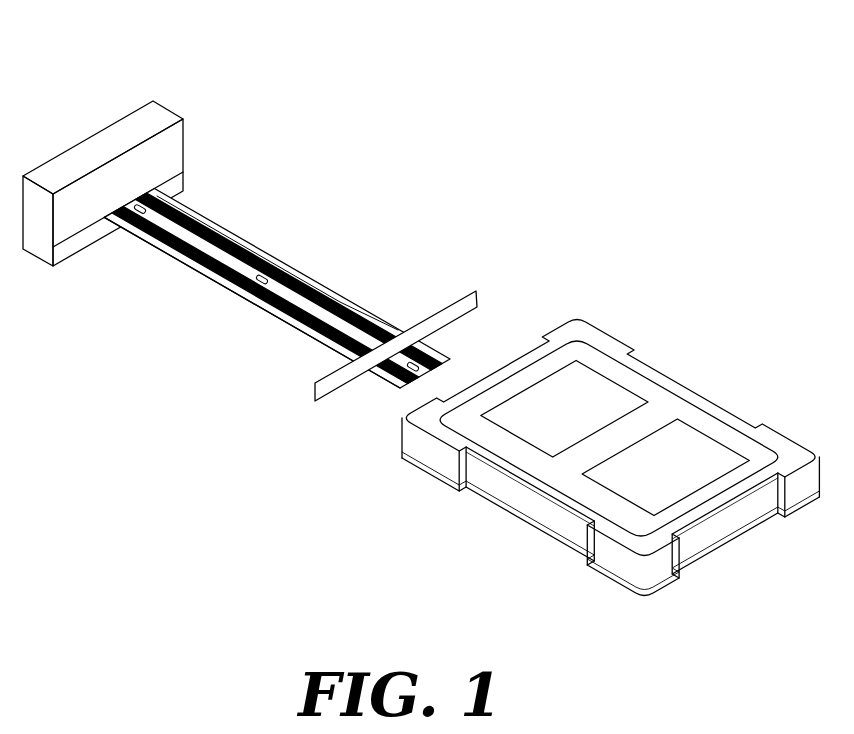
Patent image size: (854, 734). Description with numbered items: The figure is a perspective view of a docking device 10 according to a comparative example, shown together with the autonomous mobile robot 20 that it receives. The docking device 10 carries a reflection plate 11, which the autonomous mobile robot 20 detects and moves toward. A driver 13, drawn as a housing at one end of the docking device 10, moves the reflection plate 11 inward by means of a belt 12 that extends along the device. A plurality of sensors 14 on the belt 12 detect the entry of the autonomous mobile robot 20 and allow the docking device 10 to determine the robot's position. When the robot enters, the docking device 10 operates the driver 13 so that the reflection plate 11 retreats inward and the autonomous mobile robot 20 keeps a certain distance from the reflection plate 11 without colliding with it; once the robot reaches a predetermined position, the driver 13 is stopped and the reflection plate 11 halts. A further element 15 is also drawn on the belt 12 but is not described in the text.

The docking device 10 is at (323, 289).
The reflection plate 11 is at (478, 294).
The belt 12 is at (266, 303).
The driver 13 is at (186, 93).
The sensor 14 is at (302, 279).
The strip lower layer 15 is at (178, 249).
The autonomous mobile robot 20 is at (689, 352).